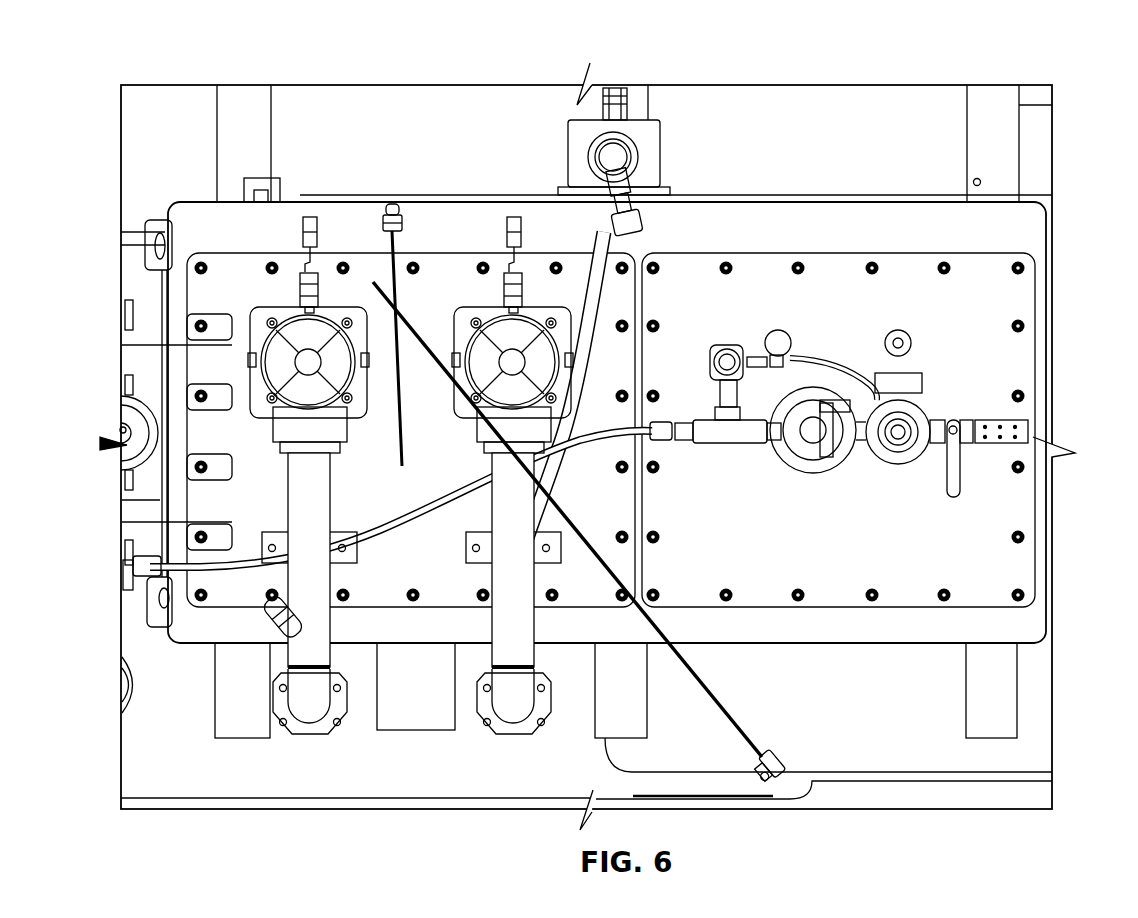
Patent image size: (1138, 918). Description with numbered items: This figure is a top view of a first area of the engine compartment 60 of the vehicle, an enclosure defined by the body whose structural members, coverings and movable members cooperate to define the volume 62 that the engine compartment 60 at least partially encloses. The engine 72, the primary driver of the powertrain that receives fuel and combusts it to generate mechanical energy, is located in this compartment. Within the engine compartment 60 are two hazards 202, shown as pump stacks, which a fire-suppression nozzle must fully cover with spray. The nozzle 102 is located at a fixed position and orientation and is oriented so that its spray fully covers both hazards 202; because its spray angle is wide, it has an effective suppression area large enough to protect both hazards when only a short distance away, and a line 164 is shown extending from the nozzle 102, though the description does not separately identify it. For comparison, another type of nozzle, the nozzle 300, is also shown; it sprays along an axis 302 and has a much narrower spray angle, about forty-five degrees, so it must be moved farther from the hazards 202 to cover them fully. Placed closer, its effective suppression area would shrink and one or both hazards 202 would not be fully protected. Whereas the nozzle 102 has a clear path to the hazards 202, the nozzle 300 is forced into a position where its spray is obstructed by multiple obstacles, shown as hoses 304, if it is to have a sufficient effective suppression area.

The engine compartment 60 is at (1053, 150).
The volume 62 is at (903, 112).
The engine 72 is at (697, 270).
The nozzle 102 is at (393, 204).
The rod 164 is at (403, 428).
The hazards 202 is at (265, 312).
The nozzle 300 is at (773, 753).
The axis 302 is at (618, 572).
The hoses 304 is at (590, 343).